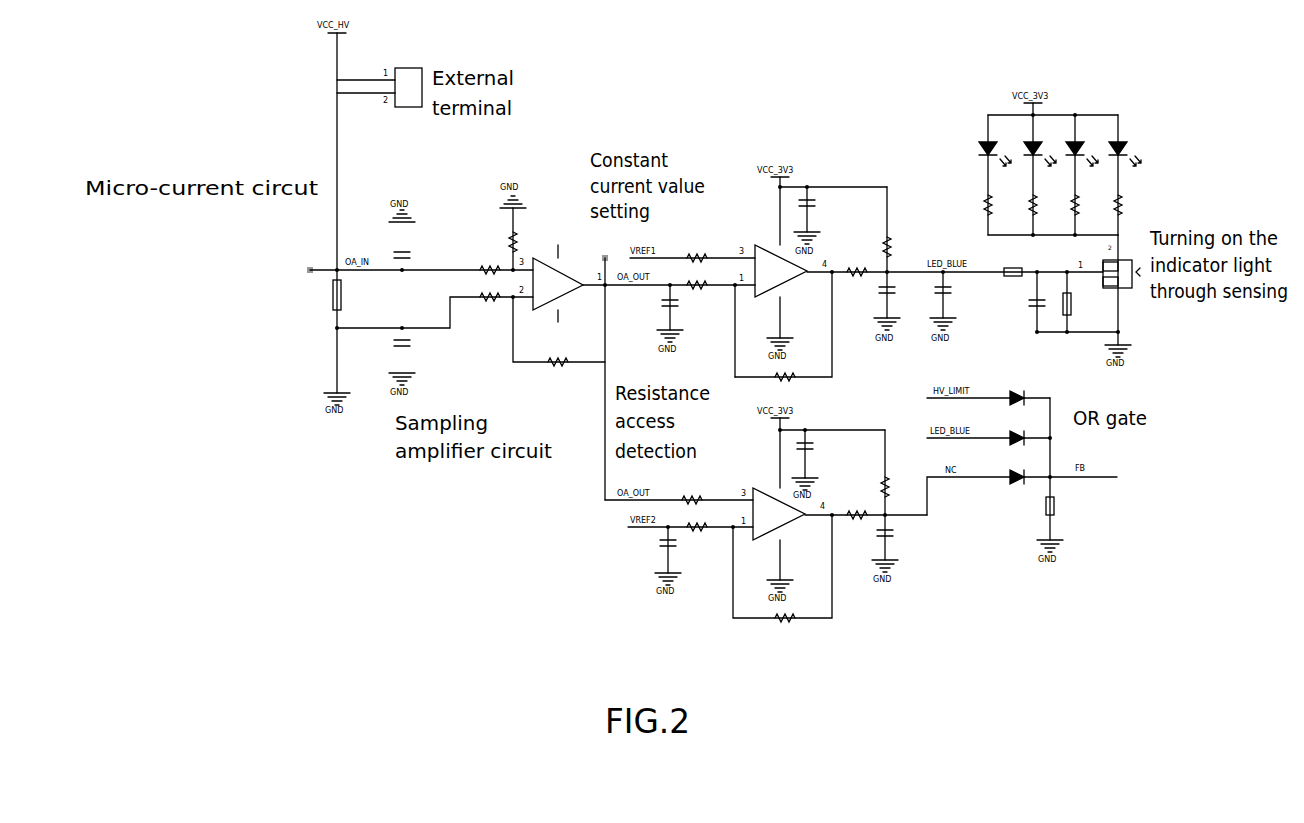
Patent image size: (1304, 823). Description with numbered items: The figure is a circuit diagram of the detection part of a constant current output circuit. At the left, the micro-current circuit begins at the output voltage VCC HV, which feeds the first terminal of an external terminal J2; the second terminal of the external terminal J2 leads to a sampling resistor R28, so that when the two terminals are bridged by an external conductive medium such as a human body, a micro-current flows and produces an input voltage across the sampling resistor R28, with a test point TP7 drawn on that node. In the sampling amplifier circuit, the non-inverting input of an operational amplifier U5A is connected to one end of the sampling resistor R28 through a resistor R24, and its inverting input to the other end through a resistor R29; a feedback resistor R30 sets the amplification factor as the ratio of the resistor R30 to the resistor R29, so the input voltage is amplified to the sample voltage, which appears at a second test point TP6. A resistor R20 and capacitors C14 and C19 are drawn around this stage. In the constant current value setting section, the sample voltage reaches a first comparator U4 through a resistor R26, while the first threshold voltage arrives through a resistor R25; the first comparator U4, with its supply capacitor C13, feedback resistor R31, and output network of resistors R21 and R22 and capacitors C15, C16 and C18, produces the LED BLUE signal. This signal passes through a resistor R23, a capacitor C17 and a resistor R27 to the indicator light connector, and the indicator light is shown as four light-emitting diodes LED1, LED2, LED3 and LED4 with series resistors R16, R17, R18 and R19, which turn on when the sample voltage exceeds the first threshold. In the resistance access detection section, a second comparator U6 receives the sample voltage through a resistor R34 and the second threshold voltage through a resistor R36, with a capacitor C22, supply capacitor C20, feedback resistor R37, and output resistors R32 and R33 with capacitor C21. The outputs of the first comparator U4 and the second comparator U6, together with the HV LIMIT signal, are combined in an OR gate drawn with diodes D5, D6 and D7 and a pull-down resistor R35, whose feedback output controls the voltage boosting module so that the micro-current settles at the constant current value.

The external terminal J2 is at (408, 81).
The test point OA_IN TP7 is at (309, 264).
The test point OA_OUT TP6 is at (603, 252).
The sampling resistor R28 is at (322, 295).
The resistor R29 is at (490, 301).
The resistor R24 is at (485, 265).
The resistor R20 is at (505, 242).
The resistor R30 is at (558, 358).
The resistor R25 is at (689, 262).
The resistor R26 is at (689, 281).
The resistor R21 is at (895, 247).
The resistor R22 is at (857, 267).
The resistor R23 is at (1013, 266).
The resistor R27 is at (1076, 304).
The feedback resistor R31 is at (778, 373).
The LED resistor R16 is at (996, 205).
The LED resistor R17 is at (1041, 205).
The LED resistor R18 is at (1083, 205).
The LED resistor R19 is at (1126, 205).
The resistor R32 is at (893, 488).
The resistor R33 is at (857, 510).
The resistor R34 is at (686, 504).
The pull-down resistor R35 is at (1059, 508).
The resistor R36 is at (685, 523).
The feedback resistor R37 is at (780, 614).
The capacitor C13 is at (815, 203).
The capacitor C14 is at (396, 250).
The capacitor C15 is at (895, 290).
The capacitor C16 is at (951, 290).
The capacitor C17 is at (1025, 304).
The capacitor C18 is at (678, 303).
The capacitor C19 is at (410, 343).
The capacitor C20 is at (813, 446).
The capacitor C21 is at (893, 533).
The capacitor C22 is at (676, 543).
The operational amplifier U5A is at (557, 283).
The first comparator U4 is at (779, 262).
The second comparator U6 is at (777, 505).
The indicator LED LED1 is at (996, 148).
The indicator LED LED2 is at (1041, 148).
The indicator LED LED3 is at (1083, 148).
The indicator LED LED4 is at (1126, 148).
The OR gate diode D5 is at (1017, 390).
The OR gate diode D6 is at (1017, 430).
The OR gate diode D7 is at (1017, 469).